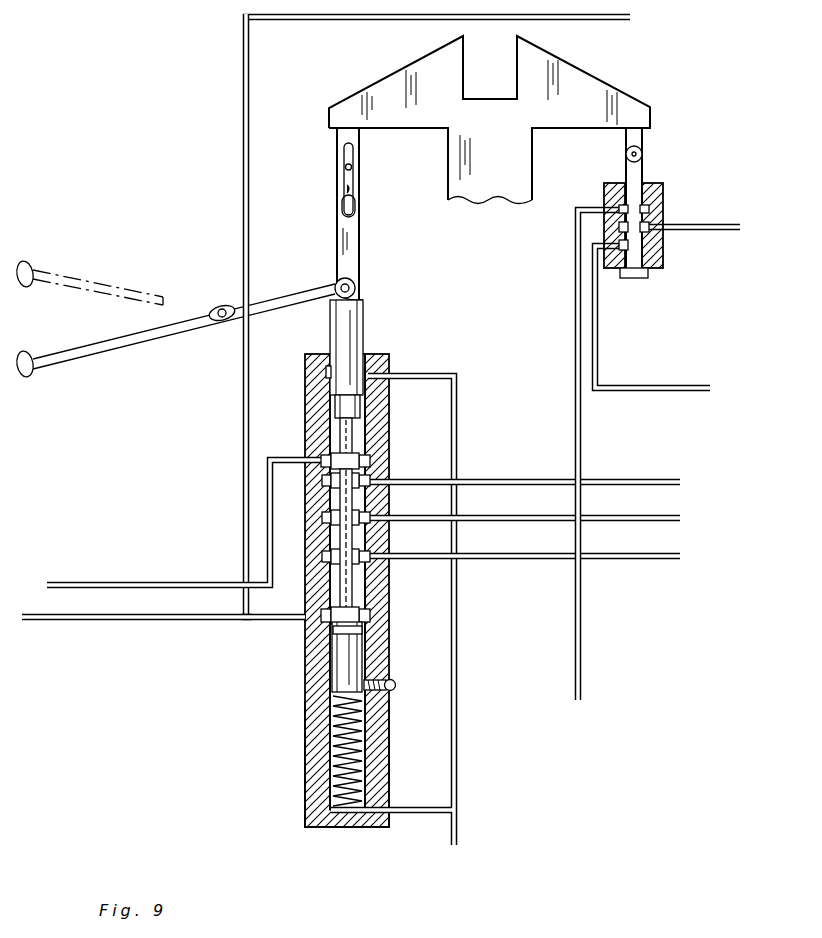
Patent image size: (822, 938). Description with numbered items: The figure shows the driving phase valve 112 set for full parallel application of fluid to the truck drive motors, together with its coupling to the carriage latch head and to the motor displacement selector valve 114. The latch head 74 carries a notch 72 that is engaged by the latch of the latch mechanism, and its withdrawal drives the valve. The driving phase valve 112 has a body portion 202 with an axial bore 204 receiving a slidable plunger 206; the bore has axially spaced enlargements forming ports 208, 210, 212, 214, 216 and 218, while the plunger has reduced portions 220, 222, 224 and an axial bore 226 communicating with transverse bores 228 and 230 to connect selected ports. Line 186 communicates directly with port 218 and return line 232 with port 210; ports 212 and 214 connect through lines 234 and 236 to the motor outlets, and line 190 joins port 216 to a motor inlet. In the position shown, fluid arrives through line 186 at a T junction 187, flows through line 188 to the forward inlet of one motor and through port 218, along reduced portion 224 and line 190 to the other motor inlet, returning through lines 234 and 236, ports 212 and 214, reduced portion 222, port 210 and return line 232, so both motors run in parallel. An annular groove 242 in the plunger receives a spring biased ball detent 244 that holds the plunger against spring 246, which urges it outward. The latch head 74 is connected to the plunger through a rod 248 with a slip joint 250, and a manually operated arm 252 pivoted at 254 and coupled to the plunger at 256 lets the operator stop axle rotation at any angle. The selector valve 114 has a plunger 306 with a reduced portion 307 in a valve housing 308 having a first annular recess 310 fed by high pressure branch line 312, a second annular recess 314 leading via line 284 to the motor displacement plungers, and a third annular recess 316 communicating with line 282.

The notch 72 is at (518, 56).
The latch head 74 is at (373, 86).
The driving phase valve 112 is at (296, 712).
The selector valve 114 is at (603, 183).
The line 186 is at (95, 620).
The T junction 187 is at (246, 620).
The line 188 is at (243, 432).
The line 190 is at (502, 560).
The body portion 202 is at (305, 768).
The axial bore 204 is at (363, 596).
The plunger 206 is at (364, 331).
The port 208 is at (317, 374).
The port 210 is at (372, 460).
The port 212 is at (323, 481).
The port 214 is at (323, 518).
The port 216 is at (323, 560).
The port 218 is at (372, 616).
The reduced portion 220 is at (362, 408).
The reduced portion 222 is at (372, 514).
The reduced portion 224 is at (362, 573).
The axial bore 226 is at (372, 478).
The transverse bore 228 is at (365, 432).
The transverse bore 230 is at (372, 552).
The return line 232 is at (115, 583).
The line 234 is at (535, 480).
The line 236 is at (492, 518).
The annular groove 242 is at (376, 640).
The ball detent 244 is at (390, 692).
The spring 246 is at (333, 742).
The rod 248 is at (356, 241).
The slip joint 250 is at (343, 190).
The arm 252 is at (120, 283).
The pivot 254 is at (222, 318).
The coupling 256 is at (336, 280).
The line 282 is at (583, 434).
The line 284 is at (724, 230).
The plunger 306 is at (645, 172).
The reduced portion 307 is at (650, 226).
The valve housing 308 is at (664, 190).
The first annular recess 310 is at (648, 260).
The high pressure branch line 312 is at (600, 330).
The second annular recess 314 is at (604, 236).
The third annular recess 316 is at (650, 210).